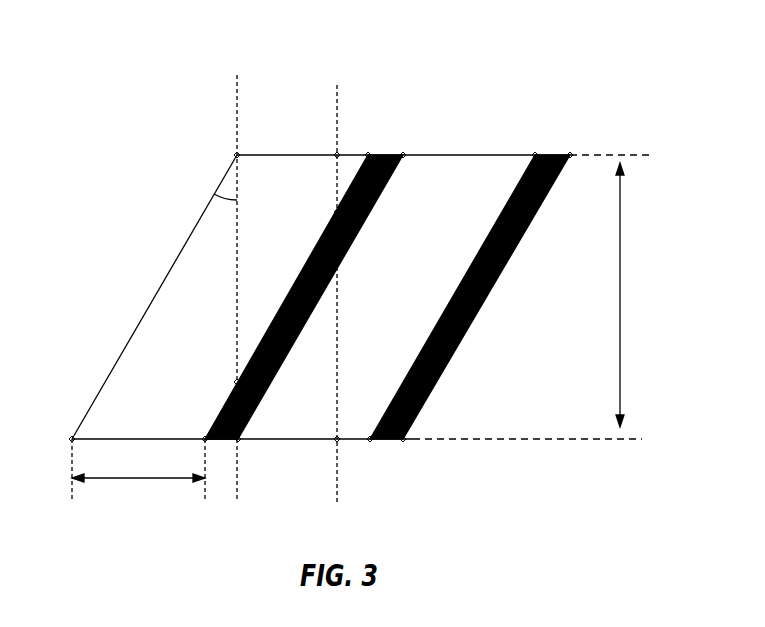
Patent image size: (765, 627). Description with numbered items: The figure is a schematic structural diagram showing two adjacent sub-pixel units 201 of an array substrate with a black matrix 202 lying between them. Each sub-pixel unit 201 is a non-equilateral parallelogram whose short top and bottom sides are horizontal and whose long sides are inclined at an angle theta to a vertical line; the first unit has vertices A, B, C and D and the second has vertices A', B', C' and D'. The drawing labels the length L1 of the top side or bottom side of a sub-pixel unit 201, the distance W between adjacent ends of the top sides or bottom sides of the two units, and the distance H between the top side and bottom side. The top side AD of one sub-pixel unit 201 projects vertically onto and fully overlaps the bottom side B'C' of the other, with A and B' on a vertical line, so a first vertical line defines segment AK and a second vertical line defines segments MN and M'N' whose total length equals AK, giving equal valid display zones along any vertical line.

The sub-pixel unit 201 is at (257, 165).
The black matrix 202 is at (562, 155).
The distance between top side and bottom side H is at (605, 295).
The length of top side or bottom side L1 is at (138, 469).
The distance between adjacent ends of top or bottom sides W is at (221, 457).